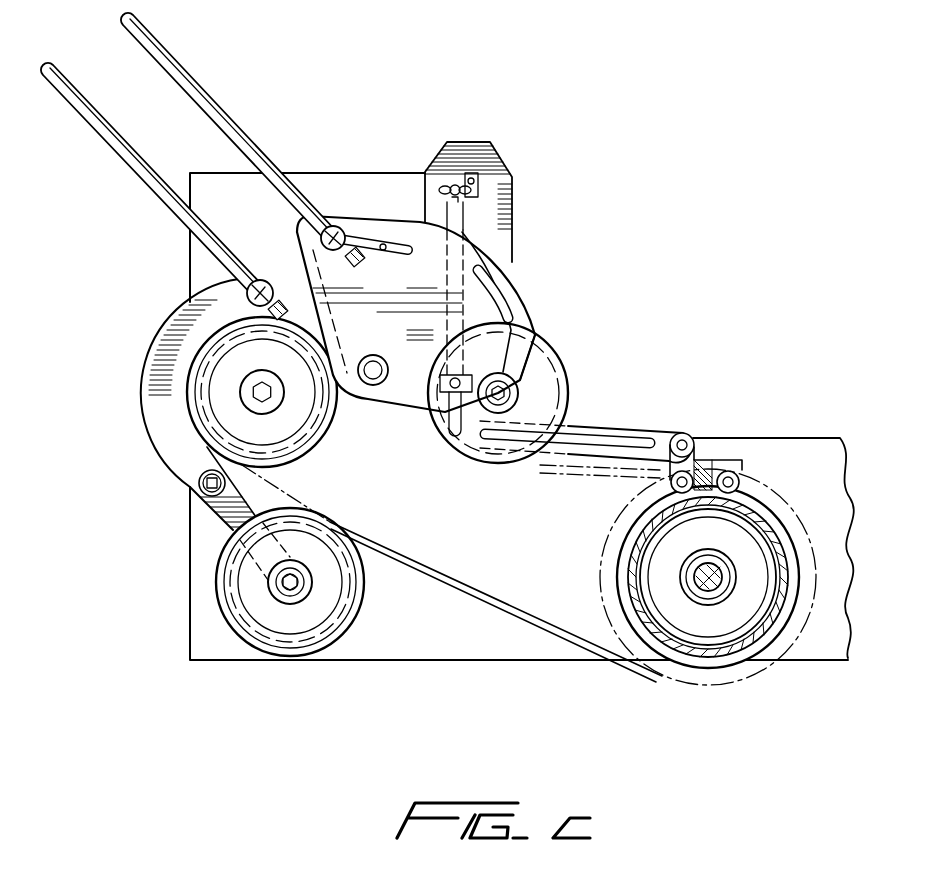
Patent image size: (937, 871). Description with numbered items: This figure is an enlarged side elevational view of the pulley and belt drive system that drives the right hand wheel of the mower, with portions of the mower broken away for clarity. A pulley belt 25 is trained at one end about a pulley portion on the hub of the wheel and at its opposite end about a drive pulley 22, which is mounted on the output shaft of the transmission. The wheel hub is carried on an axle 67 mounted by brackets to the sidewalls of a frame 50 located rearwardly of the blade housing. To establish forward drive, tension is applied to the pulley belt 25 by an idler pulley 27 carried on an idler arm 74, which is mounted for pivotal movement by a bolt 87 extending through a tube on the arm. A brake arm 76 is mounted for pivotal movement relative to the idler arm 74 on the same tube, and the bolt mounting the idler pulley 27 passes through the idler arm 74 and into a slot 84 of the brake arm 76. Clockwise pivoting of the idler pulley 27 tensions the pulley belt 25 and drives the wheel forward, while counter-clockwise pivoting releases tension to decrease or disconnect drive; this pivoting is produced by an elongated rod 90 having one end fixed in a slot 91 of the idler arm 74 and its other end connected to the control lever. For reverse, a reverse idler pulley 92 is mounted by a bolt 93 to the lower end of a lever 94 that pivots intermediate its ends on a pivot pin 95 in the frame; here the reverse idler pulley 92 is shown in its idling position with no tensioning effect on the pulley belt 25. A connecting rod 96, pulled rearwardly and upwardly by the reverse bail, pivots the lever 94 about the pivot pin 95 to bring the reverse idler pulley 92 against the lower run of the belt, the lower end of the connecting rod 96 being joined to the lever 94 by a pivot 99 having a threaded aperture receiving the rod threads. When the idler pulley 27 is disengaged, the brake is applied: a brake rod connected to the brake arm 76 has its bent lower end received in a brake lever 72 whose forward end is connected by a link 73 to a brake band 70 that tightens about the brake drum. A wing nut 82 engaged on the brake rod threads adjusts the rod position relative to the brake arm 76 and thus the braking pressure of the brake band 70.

The drive pulley 22 is at (297, 422).
The pulley belt 25 is at (503, 603).
The idler pulley 27 is at (572, 392).
The frame 50 is at (800, 438).
The axle 67 is at (710, 590).
The brake band 70 is at (768, 507).
The brake lever 72 is at (663, 434).
The link 73 is at (693, 462).
The idler arm 74 is at (416, 314).
The brake arm 76 is at (520, 286).
The wing nut 82 is at (480, 192).
The slot 84 is at (540, 311).
The bolt 87 is at (358, 357).
The elongated rod 90 is at (220, 110).
The slot 91 is at (383, 251).
The reverse idler pulley 92 is at (362, 607).
The bolt 93 is at (281, 588).
The lever 94 is at (150, 373).
The pivot pin 95 is at (207, 485).
The connecting rod 96 is at (120, 134).
The pivot 99 is at (262, 280).